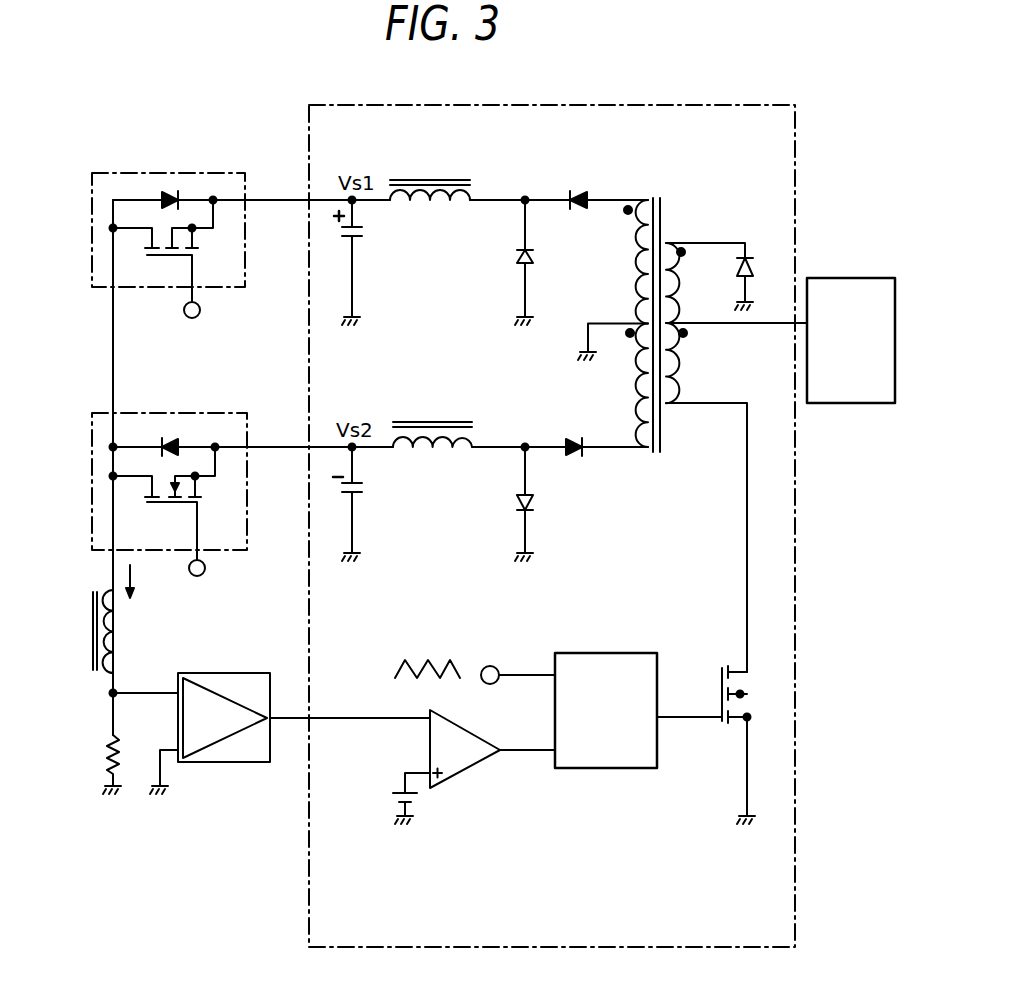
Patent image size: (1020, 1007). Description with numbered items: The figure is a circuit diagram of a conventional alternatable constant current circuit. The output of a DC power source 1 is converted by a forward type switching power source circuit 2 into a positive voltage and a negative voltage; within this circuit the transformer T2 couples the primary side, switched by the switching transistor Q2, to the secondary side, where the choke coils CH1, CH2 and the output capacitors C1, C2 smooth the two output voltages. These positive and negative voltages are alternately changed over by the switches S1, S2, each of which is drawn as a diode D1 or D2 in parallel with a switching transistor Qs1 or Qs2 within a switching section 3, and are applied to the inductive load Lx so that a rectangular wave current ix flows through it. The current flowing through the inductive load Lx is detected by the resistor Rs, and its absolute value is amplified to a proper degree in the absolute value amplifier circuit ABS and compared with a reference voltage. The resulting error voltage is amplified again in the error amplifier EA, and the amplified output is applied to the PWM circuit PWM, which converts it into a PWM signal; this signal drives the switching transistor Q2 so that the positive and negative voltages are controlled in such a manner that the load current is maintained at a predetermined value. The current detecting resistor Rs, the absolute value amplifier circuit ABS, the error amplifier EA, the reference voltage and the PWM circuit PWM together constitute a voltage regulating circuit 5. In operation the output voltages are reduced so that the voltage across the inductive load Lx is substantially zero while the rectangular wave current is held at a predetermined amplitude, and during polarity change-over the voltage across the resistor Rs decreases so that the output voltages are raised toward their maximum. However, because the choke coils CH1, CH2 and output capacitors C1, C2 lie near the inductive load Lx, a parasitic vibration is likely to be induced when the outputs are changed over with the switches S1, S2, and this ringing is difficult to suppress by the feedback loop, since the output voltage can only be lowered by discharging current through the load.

The DC power source 1 is at (850, 278).
The forward type switching power source circuit 2 is at (357, 949).
The switching circuit 3 is at (92, 371).
The voltage regulating circuit 5 is at (333, 800).
The switch S1 is at (222, 234).
The switch S2 is at (222, 484).
The diode D1 is at (232, 191).
The diode D2 is at (232, 438).
The switching transistor Qs1 is at (173, 260).
The switching transistor Qs2 is at (175, 513).
The output capacitor C1 is at (364, 232).
The output capacitor C2 is at (364, 488).
The choke coil CH1 is at (437, 176).
The choke coil CH2 is at (438, 420).
The transformer T2 is at (632, 340).
The inductive load Lx is at (122, 631).
The resistor Rs is at (101, 764).
The absolute value amplifier circuit ABS is at (271, 738).
The error amplifier EA is at (474, 767).
The PWM circuit PWM is at (558, 710).
The switching transistor Q2 is at (750, 664).
The current ix is at (143, 581).